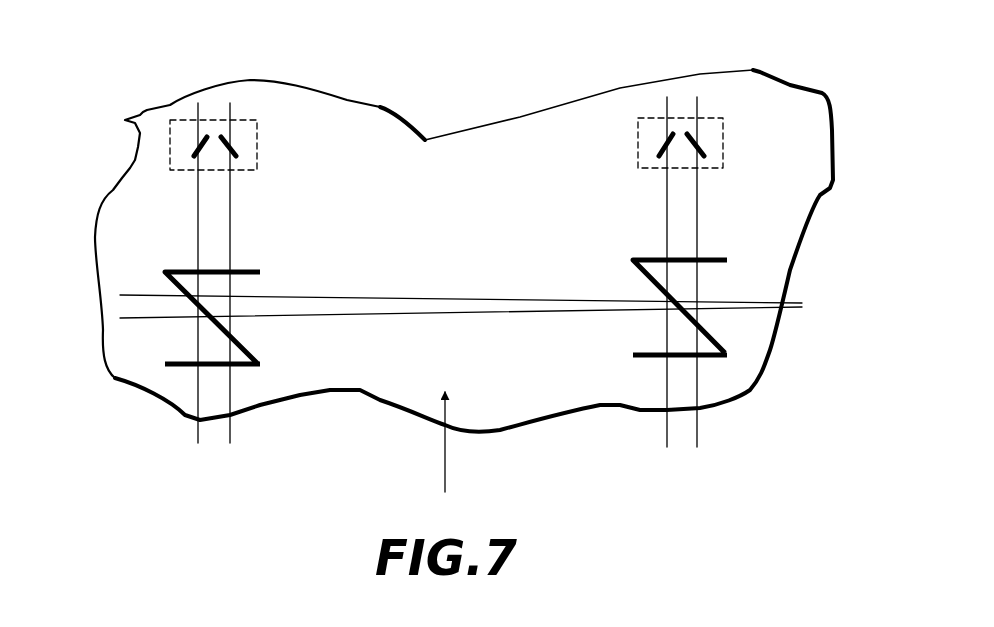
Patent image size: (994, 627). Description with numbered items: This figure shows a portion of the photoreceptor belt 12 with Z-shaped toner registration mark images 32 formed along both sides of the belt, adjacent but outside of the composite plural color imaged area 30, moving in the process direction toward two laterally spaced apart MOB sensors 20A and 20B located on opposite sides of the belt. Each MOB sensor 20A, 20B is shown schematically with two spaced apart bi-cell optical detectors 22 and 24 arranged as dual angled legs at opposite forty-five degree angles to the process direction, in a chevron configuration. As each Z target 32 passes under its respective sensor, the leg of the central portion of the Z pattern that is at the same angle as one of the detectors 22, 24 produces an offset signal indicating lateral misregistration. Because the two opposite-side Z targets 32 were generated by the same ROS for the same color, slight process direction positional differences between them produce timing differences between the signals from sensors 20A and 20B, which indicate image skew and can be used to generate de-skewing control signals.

The photoreceptor belt 12 is at (482, 137).
The MOB sensor 20A is at (257, 165).
The MOB sensor 20B is at (723, 145).
The bi-cell optical detector 22 is at (193, 152).
The bi-cell optical detector 24 is at (235, 147).
The imaged area 30 is at (525, 330).
The Z shaped toner registration mark image 32 is at (247, 343).